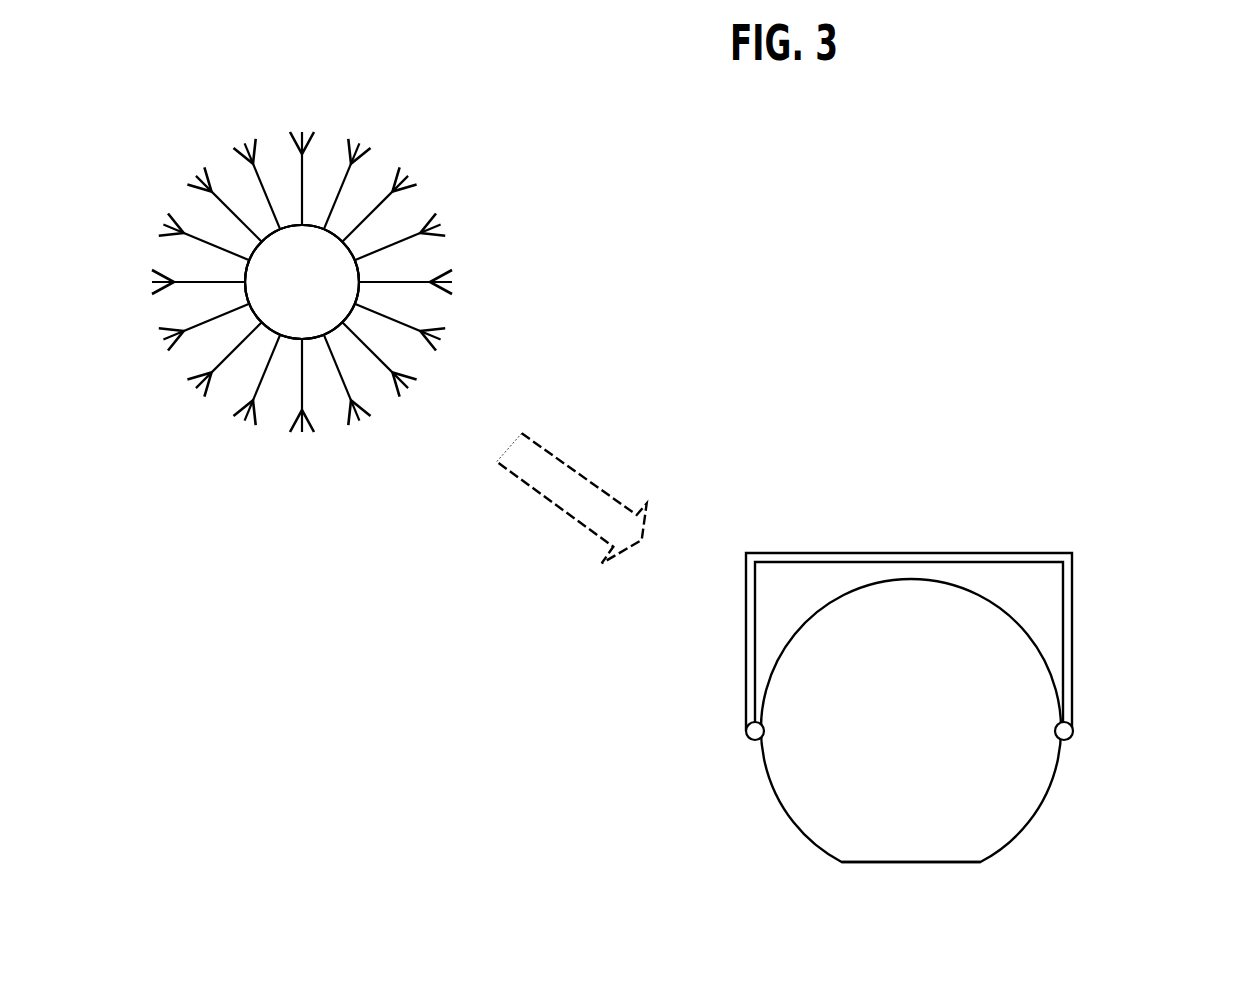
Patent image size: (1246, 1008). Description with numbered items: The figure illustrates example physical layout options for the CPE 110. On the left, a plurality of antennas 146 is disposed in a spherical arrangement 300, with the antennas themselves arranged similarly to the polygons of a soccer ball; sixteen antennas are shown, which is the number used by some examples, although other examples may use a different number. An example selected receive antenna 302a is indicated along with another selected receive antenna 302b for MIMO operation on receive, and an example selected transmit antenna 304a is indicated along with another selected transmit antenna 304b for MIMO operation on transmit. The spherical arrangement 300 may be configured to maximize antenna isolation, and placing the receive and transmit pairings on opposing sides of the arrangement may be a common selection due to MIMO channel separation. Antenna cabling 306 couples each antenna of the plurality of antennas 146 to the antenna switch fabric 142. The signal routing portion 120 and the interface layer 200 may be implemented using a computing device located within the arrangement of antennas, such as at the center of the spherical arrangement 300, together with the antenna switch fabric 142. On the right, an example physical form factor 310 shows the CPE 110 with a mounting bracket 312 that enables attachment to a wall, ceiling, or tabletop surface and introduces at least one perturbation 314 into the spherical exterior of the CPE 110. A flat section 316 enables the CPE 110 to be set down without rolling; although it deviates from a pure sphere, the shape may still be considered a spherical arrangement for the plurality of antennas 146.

The spherical arrangement 300 is at (316, 283).
The signal routing portion 120 is at (312, 266).
The interface layer 200 is at (304, 296).
The antenna switch fabric 142 is at (320, 324).
The selected receive antenna 302a is at (448, 272).
The selected receive antenna 302b is at (153, 271).
The selected transmit antenna 304a is at (312, 430).
The selected transmit antenna 304b is at (312, 130).
The antenna cabling 306 is at (400, 320).
The plurality of antennas 146 is at (220, 415).
The physical form factor 310 is at (960, 700).
The mounting bracket 312 is at (767, 535).
The perturbation 314 is at (1055, 740).
The flat section 316 is at (863, 872).
The CPE 110 is at (952, 743).